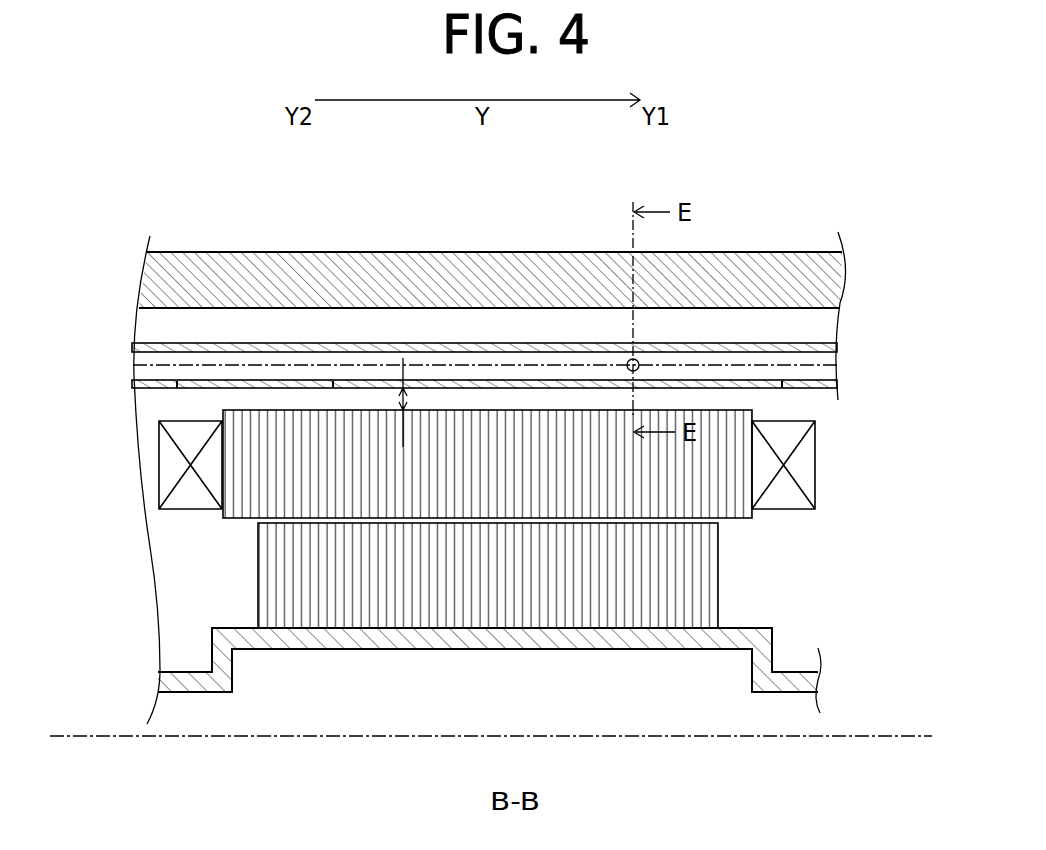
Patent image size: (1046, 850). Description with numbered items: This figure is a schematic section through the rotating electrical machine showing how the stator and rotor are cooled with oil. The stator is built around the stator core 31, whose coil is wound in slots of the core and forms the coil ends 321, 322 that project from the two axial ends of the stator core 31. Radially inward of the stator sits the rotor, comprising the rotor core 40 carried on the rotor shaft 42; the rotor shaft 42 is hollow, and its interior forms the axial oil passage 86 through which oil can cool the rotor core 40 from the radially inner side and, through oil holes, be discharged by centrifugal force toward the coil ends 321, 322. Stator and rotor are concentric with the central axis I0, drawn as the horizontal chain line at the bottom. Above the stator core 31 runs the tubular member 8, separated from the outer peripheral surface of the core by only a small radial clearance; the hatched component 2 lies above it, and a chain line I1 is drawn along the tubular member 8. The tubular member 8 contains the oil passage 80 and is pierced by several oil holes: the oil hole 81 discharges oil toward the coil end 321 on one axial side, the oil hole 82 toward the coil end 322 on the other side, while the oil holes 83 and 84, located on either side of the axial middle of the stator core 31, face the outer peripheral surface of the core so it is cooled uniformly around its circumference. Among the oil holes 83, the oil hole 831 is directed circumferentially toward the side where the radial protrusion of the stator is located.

The rotor core / magnet member 2 is at (396, 268).
The tubular member 8 is at (501, 332).
The oil passage 80 is at (469, 376).
The oil hole 81 is at (782, 387).
The oil hole 82 is at (177, 384).
The oil hole 83 is at (627, 384).
The oil hole 831 is at (640, 365).
The oil hole 84 is at (333, 383).
The stator core 31 is at (658, 483).
The coil end 321 is at (815, 465).
The coil end 322 is at (185, 495).
The rotor core 40 is at (718, 573).
The rotor shaft 42 is at (560, 633).
The axial oil passage 86 is at (496, 692).
The center line of coating I1 is at (787, 365).
The central axis I0 is at (868, 737).